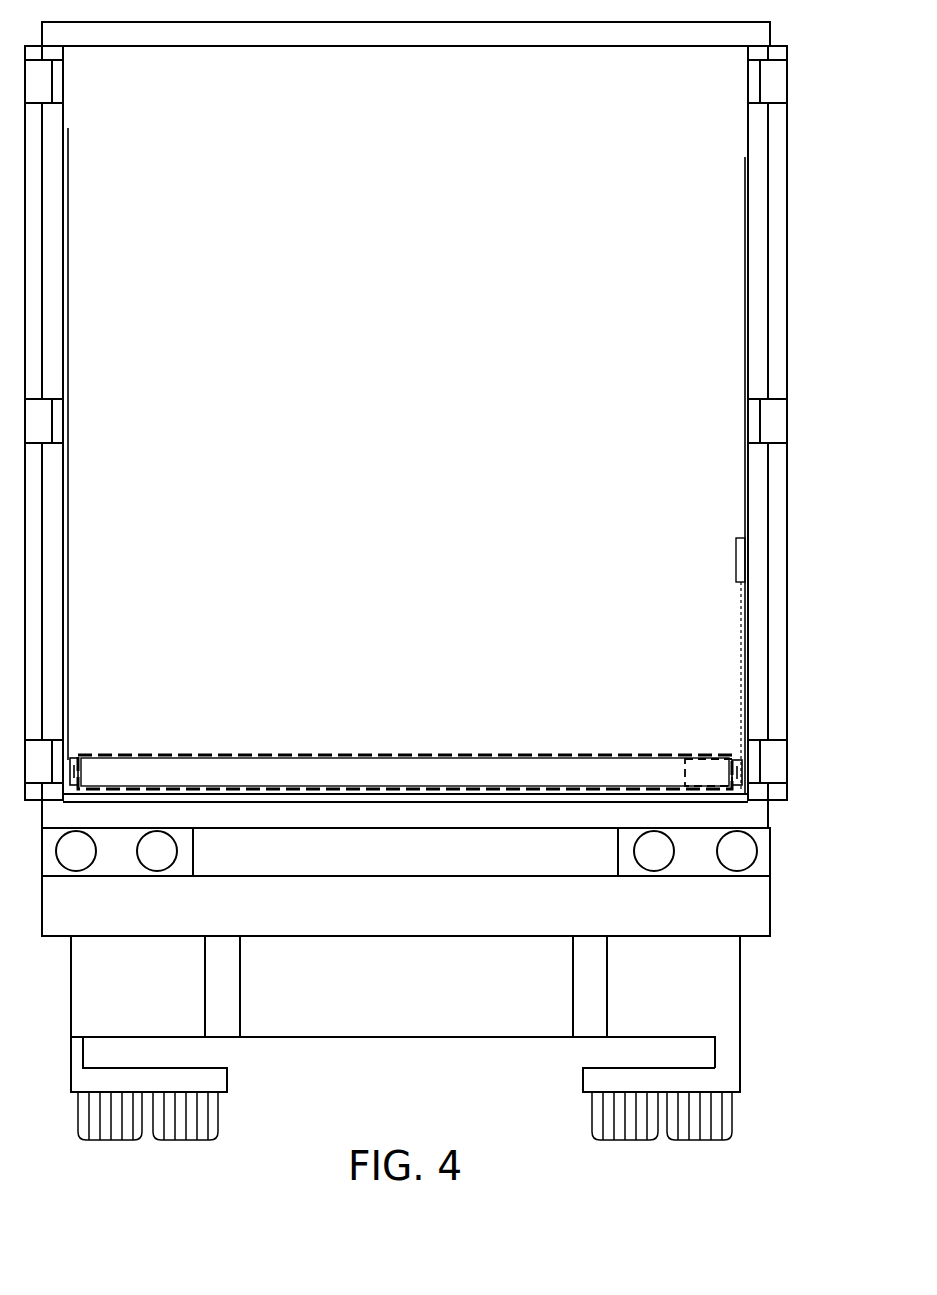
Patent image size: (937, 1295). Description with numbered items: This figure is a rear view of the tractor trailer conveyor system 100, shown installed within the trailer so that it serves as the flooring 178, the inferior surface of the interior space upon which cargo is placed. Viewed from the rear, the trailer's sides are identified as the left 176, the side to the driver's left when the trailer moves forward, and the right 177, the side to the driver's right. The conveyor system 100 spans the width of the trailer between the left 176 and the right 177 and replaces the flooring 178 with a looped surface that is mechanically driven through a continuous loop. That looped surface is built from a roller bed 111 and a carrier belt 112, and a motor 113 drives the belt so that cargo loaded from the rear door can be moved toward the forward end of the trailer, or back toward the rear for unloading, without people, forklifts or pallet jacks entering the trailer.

The tractor trailer conveyor system 100 is at (453, 753).
The roller bed 111 is at (521, 773).
The carrier belt 112 is at (637, 755).
The motor 113 is at (715, 765).
The left 176 is at (135, 399).
The right 177 is at (700, 375).
The flooring 178 is at (389, 556).